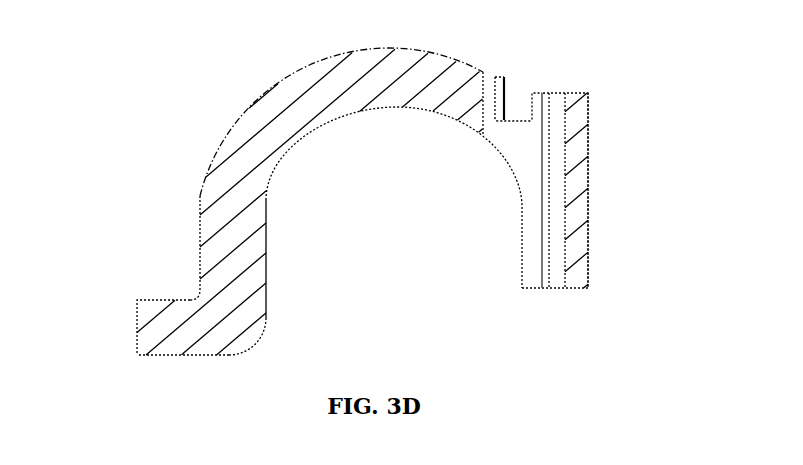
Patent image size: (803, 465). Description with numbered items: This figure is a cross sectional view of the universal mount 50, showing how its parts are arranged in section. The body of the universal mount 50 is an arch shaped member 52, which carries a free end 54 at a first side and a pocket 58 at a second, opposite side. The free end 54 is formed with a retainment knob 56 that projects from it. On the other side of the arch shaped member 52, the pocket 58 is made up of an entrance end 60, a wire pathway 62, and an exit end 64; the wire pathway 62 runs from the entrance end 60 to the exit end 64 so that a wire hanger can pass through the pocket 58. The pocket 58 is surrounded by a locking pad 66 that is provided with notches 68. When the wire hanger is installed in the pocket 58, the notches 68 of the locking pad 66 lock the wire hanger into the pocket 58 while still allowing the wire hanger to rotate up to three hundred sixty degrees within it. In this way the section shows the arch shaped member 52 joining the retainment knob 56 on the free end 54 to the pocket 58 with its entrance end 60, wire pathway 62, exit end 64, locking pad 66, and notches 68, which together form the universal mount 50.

The universal mount 50 is at (248, 105).
The arch shaped member 52 is at (330, 54).
The free end 54 is at (231, 327).
The retainment knob 56 is at (150, 317).
The pocket 58 is at (511, 145).
The entrance end 60 is at (557, 288).
The wire pathway 62 is at (560, 252).
The exit end 64 is at (558, 97).
The locking pad 66 is at (588, 143).
The notches 68 is at (543, 167).